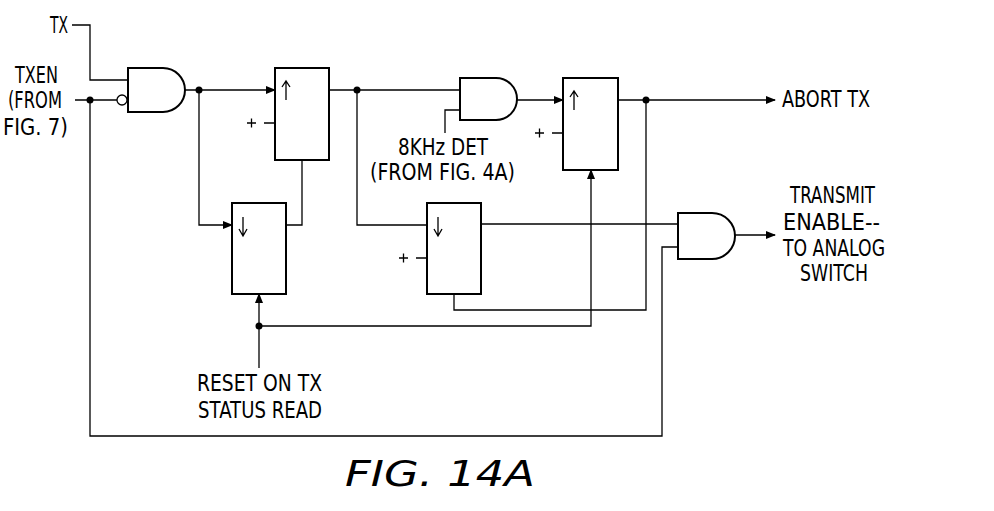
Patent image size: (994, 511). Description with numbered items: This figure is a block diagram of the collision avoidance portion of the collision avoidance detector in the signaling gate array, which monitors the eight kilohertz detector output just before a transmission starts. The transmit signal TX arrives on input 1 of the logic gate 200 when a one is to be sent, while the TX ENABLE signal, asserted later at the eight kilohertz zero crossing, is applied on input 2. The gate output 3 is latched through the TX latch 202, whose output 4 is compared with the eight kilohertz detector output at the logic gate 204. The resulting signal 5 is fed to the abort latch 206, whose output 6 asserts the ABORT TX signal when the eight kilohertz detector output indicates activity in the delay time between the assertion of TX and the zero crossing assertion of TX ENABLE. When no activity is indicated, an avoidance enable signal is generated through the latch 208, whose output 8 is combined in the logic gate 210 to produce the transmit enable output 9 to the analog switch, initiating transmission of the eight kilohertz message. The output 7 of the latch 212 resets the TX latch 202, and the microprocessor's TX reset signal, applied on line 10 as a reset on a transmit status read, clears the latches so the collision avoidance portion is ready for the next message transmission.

The logic gate 200 is at (155, 68).
The TX latch 202 is at (300, 68).
The logic gate 204 is at (480, 78).
The abort latch 206 is at (593, 78).
The latch 208 is at (481, 262).
The logic gate 210 is at (712, 260).
The latch 212 is at (232, 278).
The TX input signal line 1 is at (107, 63).
The TXEN input signal line 2 is at (108, 117).
The AND gate 200 output line 3 is at (230, 144).
The flip-flop 202 Q output line 4 is at (394, 144).
The AND gate 204 output line 5 is at (540, 87).
The flip-flop 206 Q output line (abort TX) 6 is at (614, 192).
The flip-flop 212 Q output line to reset of 202 7 is at (302, 192).
The flip-flop 208 Q output line 8 is at (579, 213).
The AND gate 210 output line (transmit enable) 9 is at (755, 222).
The reset on TX status read line 10 is at (424, 269).